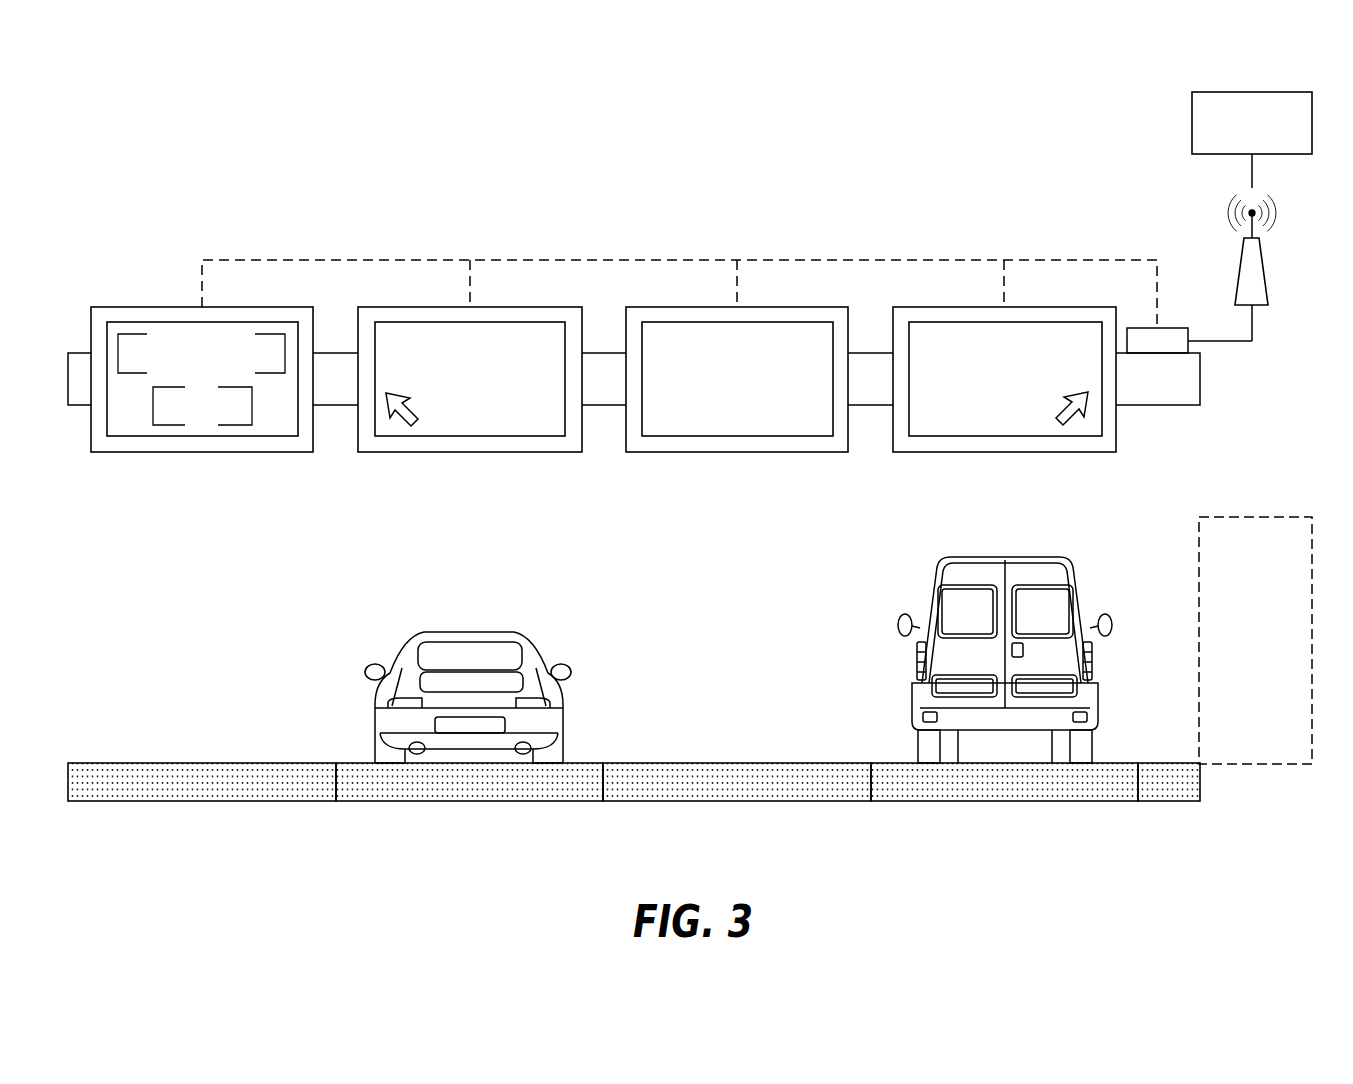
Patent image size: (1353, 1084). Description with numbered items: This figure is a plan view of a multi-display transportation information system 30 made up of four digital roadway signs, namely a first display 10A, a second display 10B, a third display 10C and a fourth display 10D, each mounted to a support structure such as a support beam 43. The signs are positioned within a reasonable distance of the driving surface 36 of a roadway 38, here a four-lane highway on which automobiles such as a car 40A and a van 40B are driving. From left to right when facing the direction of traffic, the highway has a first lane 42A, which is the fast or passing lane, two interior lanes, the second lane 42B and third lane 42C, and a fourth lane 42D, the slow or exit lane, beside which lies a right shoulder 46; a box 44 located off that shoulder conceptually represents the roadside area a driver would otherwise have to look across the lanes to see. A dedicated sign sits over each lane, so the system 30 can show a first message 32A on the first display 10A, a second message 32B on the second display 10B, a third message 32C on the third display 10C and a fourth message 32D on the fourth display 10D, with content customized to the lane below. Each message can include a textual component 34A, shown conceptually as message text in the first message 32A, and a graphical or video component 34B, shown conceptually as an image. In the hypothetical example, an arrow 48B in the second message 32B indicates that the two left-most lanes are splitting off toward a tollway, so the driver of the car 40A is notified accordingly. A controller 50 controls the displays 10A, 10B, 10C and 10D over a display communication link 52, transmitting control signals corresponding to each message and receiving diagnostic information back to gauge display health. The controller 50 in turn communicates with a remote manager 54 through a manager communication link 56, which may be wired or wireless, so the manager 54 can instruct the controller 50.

The multi-display system 30 is at (122, 168).
The first display 10A is at (210, 457).
The second display 10B is at (477, 456).
The third display 10C is at (743, 456).
The fourth display 10D is at (1012, 456).
The first message 32A is at (150, 323).
The second message 32B is at (417, 325).
The third message 32C is at (683, 325).
The fourth message 32D is at (952, 325).
The textual component 34A is at (272, 337).
The graphical or video component 34B is at (150, 407).
The arrow 48B is at (405, 421).
The support beam 43 is at (868, 392).
The display communication link 52 is at (605, 260).
The controller 50 is at (1165, 328).
The manager 54 is at (1252, 92).
The manager communication link 56 is at (1275, 263).
The roadway 38 is at (128, 685).
The driving surface 36 is at (197, 763).
The first lane 42A is at (210, 810).
The second lane 42B is at (477, 810).
The third lane 42C is at (745, 812).
The fourth lane 42D is at (1010, 810).
The right shoulder 46 is at (1170, 810).
The box 44 is at (1258, 513).
The car 40A is at (468, 632).
The van 40B is at (1003, 557).